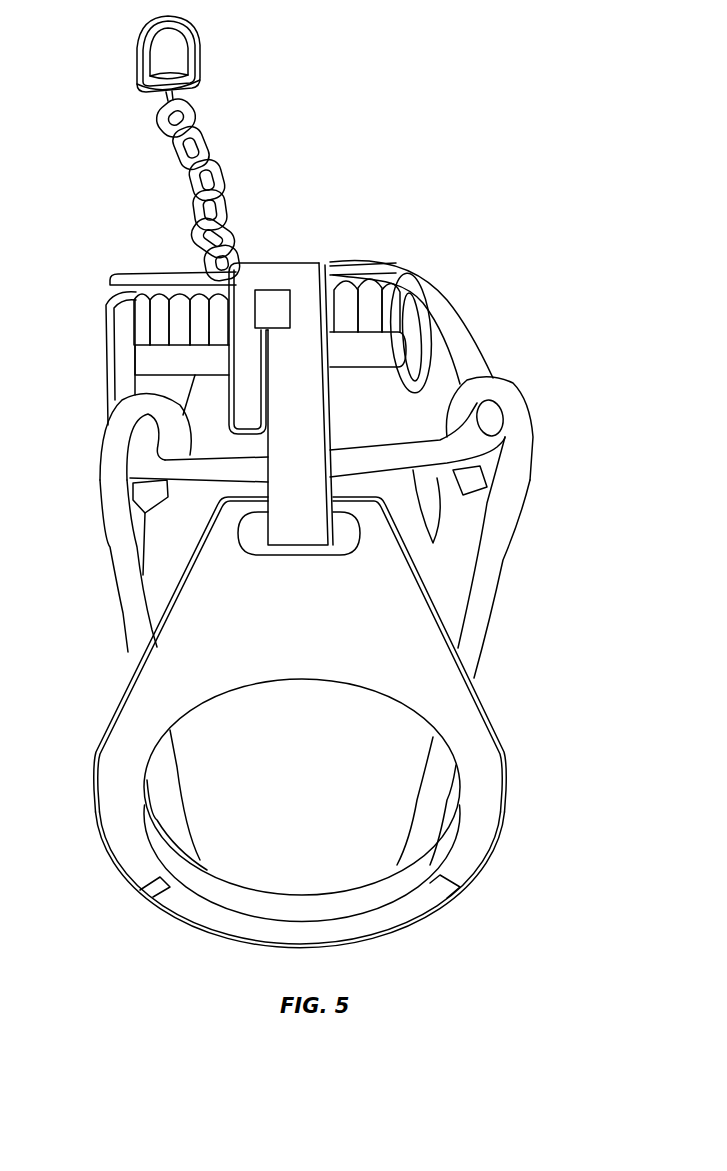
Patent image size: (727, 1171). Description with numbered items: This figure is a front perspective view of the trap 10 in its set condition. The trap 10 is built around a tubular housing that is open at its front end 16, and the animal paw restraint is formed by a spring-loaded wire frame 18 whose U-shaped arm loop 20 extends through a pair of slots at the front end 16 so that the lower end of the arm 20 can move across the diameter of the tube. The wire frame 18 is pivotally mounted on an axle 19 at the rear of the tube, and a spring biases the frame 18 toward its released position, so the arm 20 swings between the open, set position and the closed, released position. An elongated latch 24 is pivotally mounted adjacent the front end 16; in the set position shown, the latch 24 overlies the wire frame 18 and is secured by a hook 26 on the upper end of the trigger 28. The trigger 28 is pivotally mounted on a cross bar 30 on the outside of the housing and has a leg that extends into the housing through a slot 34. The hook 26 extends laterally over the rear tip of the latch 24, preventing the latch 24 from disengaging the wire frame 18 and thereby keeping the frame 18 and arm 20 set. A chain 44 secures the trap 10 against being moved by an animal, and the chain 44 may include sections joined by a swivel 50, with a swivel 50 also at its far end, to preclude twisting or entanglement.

The trap 10 is at (574, 220).
The front end 16 is at (487, 795).
The spring-loaded wire frame 18 is at (450, 321).
The axle 19 is at (136, 318).
The U-shaped arm loop 20 is at (507, 513).
The elongated latch 24 is at (300, 422).
The hook 26 is at (262, 268).
The trigger 28 is at (205, 273).
The cross bar 30 is at (370, 350).
The slot 34 is at (200, 443).
The chain 44 is at (226, 172).
The swivel 50 is at (205, 56).